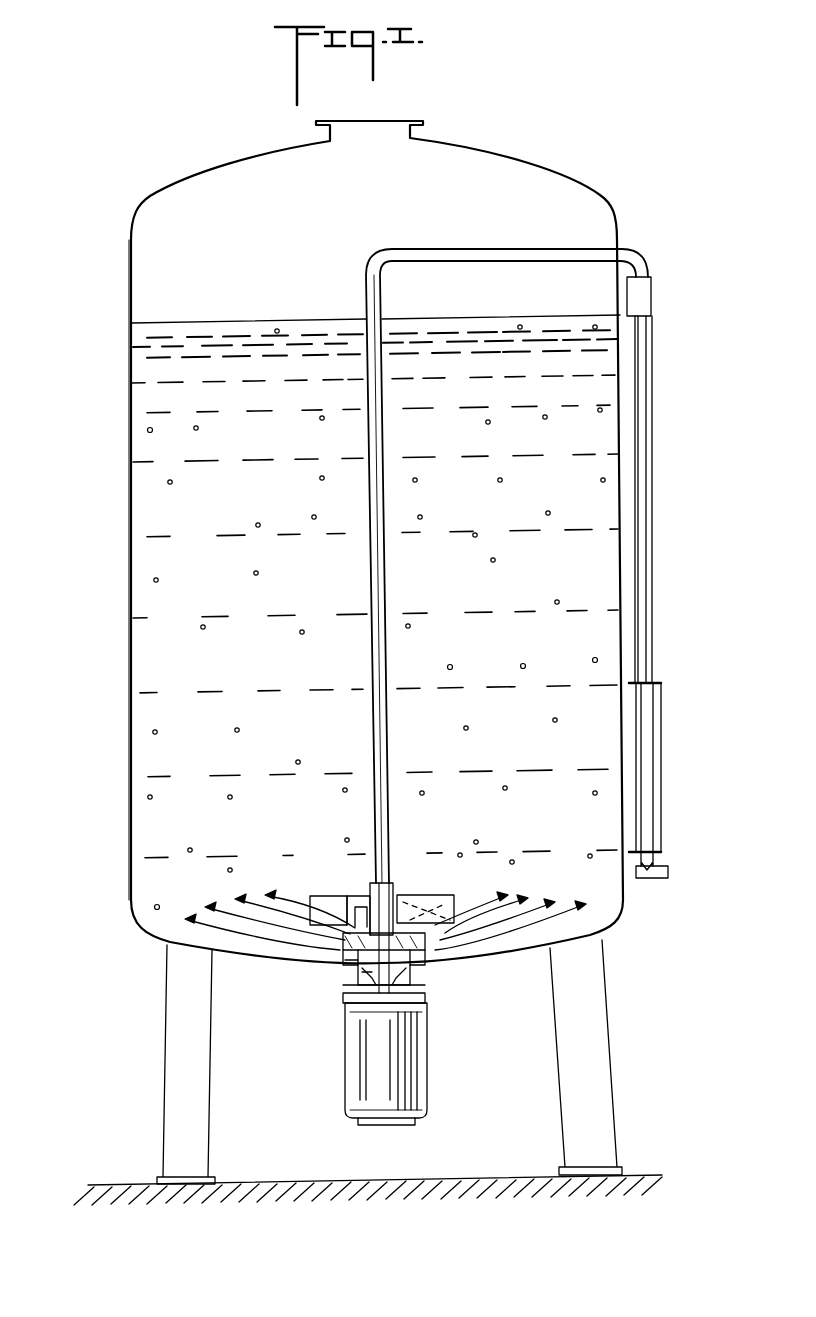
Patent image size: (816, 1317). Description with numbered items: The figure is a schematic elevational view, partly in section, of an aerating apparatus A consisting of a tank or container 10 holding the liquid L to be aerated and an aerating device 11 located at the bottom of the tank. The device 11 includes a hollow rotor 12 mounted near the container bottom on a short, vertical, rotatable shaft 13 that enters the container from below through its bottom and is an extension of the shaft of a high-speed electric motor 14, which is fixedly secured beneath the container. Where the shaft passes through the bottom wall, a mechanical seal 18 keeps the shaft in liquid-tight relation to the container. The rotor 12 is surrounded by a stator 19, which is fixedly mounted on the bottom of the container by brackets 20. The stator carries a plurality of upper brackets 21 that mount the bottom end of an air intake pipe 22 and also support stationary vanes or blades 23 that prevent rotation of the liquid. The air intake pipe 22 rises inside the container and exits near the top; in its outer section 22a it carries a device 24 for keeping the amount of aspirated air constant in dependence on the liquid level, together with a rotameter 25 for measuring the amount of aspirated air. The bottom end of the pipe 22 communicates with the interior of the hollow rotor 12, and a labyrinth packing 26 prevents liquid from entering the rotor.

The tank or container 10 is at (128, 264).
The liquid L is at (243, 330).
The aerating apparatus A is at (111, 829).
The air intake pipe 22 is at (383, 722).
The outer section of air intake pipe 22a is at (648, 568).
The device for keeping constant the amount of aspirated air 24 is at (640, 297).
The rotameter 25 is at (658, 773).
The aerating device 11 is at (452, 859).
The stationary vanes or blades 23 is at (312, 896).
The hollow rotor 12 is at (404, 942).
The upper brackets 21 is at (348, 905).
The labyrinth packing 26 is at (395, 882).
The shaft 13 is at (413, 968).
The stator 19 is at (318, 964).
The brackets 20 is at (332, 984).
The mechanical seal 18 is at (348, 991).
The high-speed electric motor 14 is at (412, 1065).